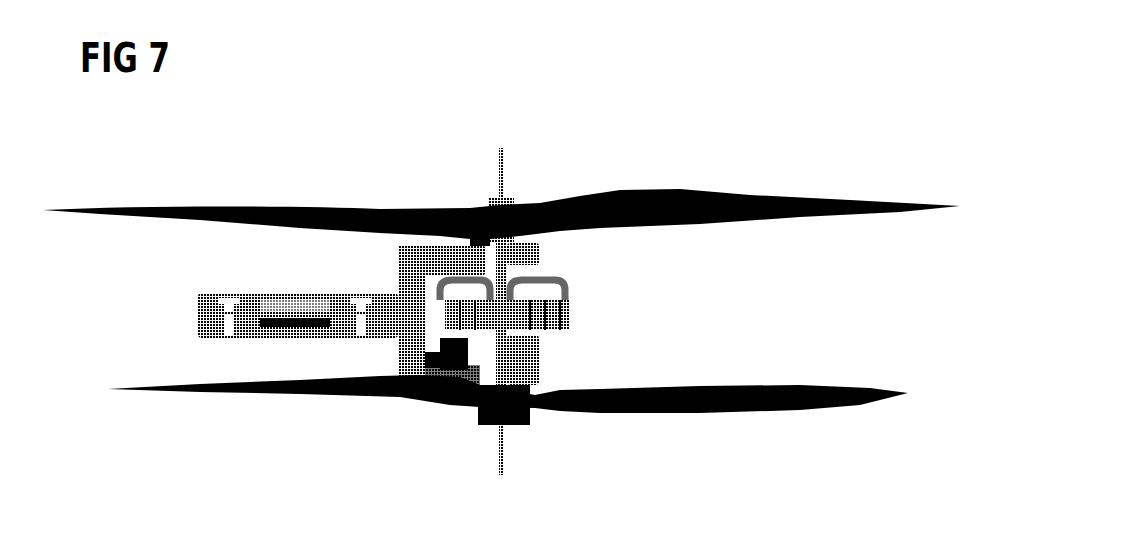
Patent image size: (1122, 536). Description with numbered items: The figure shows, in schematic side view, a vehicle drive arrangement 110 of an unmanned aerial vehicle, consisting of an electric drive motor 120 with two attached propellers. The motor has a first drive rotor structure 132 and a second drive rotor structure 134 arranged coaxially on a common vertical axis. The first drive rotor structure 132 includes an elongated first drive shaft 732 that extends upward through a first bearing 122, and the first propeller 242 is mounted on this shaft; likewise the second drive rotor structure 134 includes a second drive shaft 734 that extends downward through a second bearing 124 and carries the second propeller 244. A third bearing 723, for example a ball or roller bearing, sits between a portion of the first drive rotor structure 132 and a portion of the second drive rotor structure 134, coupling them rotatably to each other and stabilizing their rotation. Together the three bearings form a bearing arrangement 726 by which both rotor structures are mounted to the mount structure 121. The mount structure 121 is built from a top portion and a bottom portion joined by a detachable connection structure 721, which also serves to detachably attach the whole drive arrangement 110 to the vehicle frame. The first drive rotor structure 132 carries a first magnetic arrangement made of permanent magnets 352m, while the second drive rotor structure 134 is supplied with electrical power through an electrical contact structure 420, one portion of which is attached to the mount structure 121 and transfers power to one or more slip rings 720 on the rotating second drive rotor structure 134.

The vehicle drive arrangement 110 is at (320, 177).
The electric drive motor 120 is at (660, 288).
The mount structure 121 is at (263, 348).
The first bearing 122 is at (480, 238).
The second bearing 124 is at (527, 387).
The first drive rotor structure 132 is at (518, 281).
The second drive rotor structure 134 is at (568, 309).
The first propeller 242 is at (275, 207).
The second propeller 244 is at (722, 403).
The permanent magnets 352m is at (438, 327).
The electrical contact structure 420 is at (457, 375).
The slip rings 720 is at (538, 352).
The connection structure 721 is at (203, 313).
The third bearing 723 is at (528, 257).
The bearing arrangement 726 is at (483, 255).
The first drive shaft 732 is at (519, 163).
The second drive shaft 734 is at (519, 463).